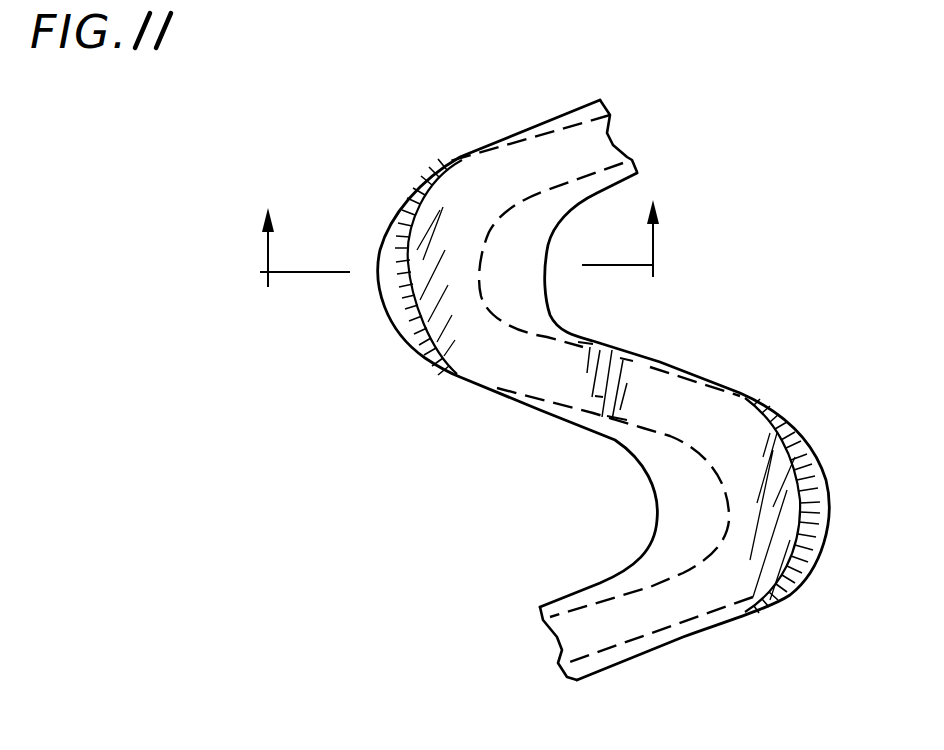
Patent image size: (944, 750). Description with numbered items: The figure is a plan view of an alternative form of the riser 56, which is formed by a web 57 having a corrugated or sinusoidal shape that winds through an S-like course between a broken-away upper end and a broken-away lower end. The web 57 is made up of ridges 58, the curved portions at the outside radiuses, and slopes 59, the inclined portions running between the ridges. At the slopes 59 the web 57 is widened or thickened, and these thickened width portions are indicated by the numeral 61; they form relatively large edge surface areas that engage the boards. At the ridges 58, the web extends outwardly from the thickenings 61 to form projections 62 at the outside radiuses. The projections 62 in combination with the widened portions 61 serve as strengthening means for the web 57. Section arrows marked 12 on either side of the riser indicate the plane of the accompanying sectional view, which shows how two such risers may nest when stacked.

The section line 12- 12 is at (457, 243).
The riser 56 is at (495, 402).
The web 57 is at (668, 362).
The ridges 58 is at (393, 330).
The slopes 59 is at (548, 412).
The thickened width portions 61 is at (620, 348).
The projections 62 is at (390, 225).